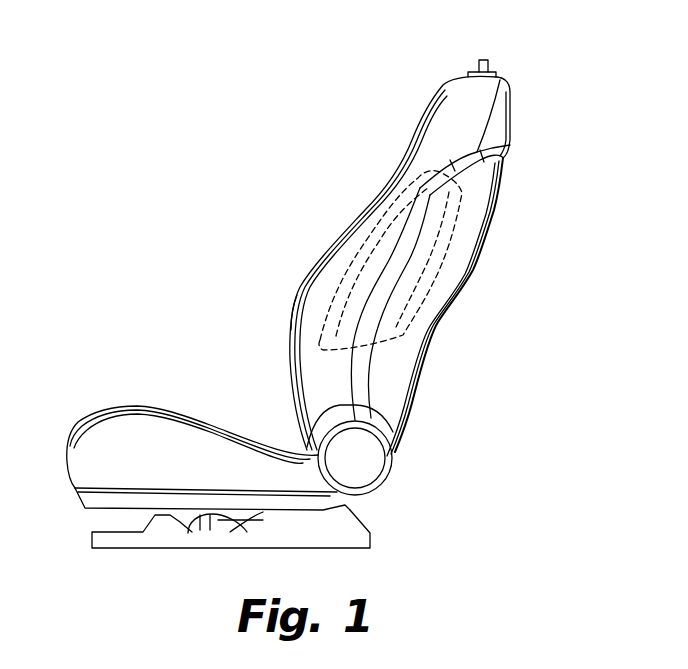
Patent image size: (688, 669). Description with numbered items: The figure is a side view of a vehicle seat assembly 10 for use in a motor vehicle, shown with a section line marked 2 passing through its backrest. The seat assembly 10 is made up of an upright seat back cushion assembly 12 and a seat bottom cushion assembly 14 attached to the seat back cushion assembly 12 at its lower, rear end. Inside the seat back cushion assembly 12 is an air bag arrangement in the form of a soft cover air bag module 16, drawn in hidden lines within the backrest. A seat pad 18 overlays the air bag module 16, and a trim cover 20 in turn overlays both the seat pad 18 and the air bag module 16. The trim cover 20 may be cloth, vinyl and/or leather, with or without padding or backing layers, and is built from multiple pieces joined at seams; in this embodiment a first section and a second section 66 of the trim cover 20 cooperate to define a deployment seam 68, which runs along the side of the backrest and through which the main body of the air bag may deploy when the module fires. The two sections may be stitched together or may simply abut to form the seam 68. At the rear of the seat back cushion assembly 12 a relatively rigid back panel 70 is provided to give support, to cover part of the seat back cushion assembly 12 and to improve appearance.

The vehicle seat assembly 10 is at (226, 202).
The seat back cushion assembly 12 is at (298, 298).
The seat bottom cushion assembly 14 is at (138, 407).
The soft cover air bag module 16 is at (477, 260).
The seat pad 18 is at (463, 118).
The trim cover 20 is at (290, 372).
The second section 66 is at (320, 385).
The deployment seam 68 is at (294, 340).
The back panel 70 is at (428, 368).
The section line 2- 2 is at (480, 318).